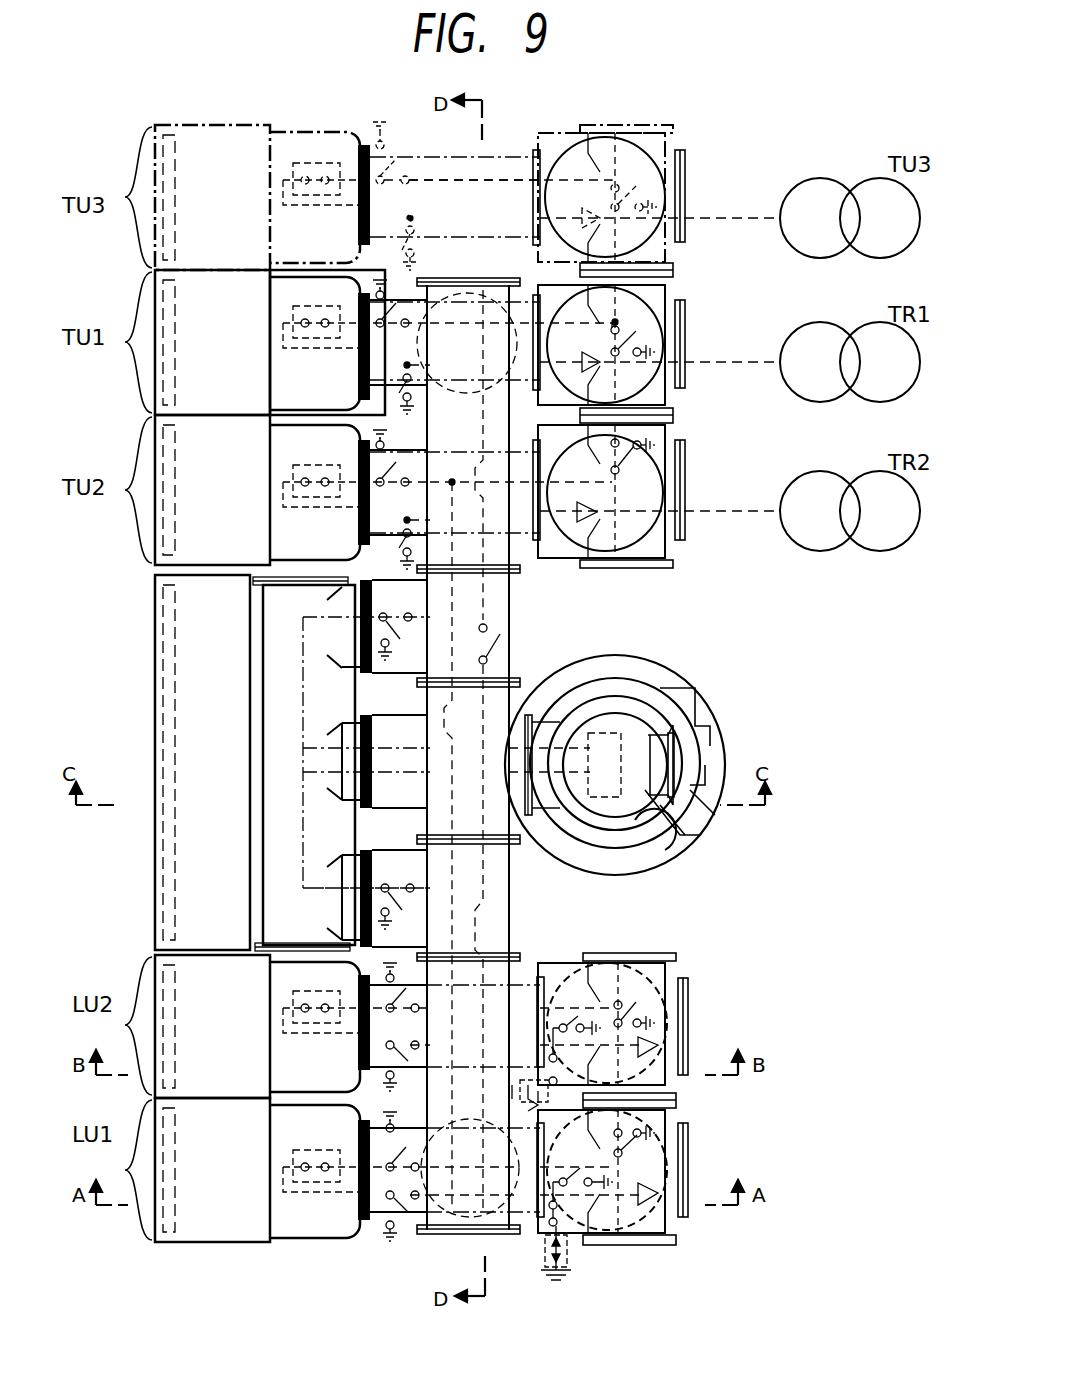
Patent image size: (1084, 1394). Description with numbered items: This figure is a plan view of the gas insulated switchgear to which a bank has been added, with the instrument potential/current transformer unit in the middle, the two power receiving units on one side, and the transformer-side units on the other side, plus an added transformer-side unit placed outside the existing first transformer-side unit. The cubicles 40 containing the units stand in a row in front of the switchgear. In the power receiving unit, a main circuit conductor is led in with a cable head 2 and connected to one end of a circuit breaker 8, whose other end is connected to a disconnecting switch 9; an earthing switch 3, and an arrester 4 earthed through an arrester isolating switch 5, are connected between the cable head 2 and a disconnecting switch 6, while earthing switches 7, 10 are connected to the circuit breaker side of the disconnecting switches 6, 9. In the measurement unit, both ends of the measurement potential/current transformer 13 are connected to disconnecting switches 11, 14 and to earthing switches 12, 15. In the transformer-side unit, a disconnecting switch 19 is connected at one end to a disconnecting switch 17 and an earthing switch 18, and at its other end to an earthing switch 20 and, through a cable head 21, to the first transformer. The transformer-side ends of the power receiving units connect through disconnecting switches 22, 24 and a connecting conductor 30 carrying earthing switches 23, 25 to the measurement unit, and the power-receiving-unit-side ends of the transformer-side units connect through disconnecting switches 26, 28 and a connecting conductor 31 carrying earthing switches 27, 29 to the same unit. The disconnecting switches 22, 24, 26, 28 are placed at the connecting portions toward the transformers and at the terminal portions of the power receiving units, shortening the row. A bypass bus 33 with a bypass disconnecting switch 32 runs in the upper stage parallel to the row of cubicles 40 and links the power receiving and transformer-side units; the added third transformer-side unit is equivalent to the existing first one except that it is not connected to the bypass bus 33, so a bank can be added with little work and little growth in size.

The cable head 2 is at (655, 1215).
The earthing switch 3 is at (575, 1170).
The arrester 4 is at (566, 1256).
The arrester isolating switch 5 is at (547, 1225).
The disconnecting switch 6 is at (403, 1230).
The earthing switch 7 is at (385, 1238).
The circuit breaker 8 is at (335, 1157).
The disconnecting switch 9 is at (416, 1130).
The earthing switch 10 is at (383, 1092).
The disconnecting switch 11 is at (395, 888).
The earthing switch 12 is at (373, 910).
The measurement potential/current transformer 13 is at (598, 735).
The disconnecting switch 14 is at (390, 635).
The earthing switch 15 is at (403, 667).
The disconnecting switch 17 is at (386, 330).
The earthing switch 18 is at (370, 280).
The disconnecting switch 19 is at (335, 308).
The earthing switch 20 is at (399, 404).
The cable head 21 is at (585, 346).
The disconnecting switch 22 is at (667, 1172).
The earthing switch 23 is at (672, 1118).
The disconnecting switch 24 is at (635, 1000).
The earthing switch 25 is at (667, 965).
The disconnecting switch 26 is at (675, 282).
The earthing switch 27 is at (687, 323).
The disconnecting switch 28 is at (610, 478).
The earthing switch 29 is at (688, 466).
The connecting conductor 30 is at (626, 1073).
The connecting conductor 31 is at (643, 378).
The bypass disconnecting switch 32 is at (495, 640).
The bypass bus 33 is at (500, 600).
The cubicles 40 is at (145, 298).